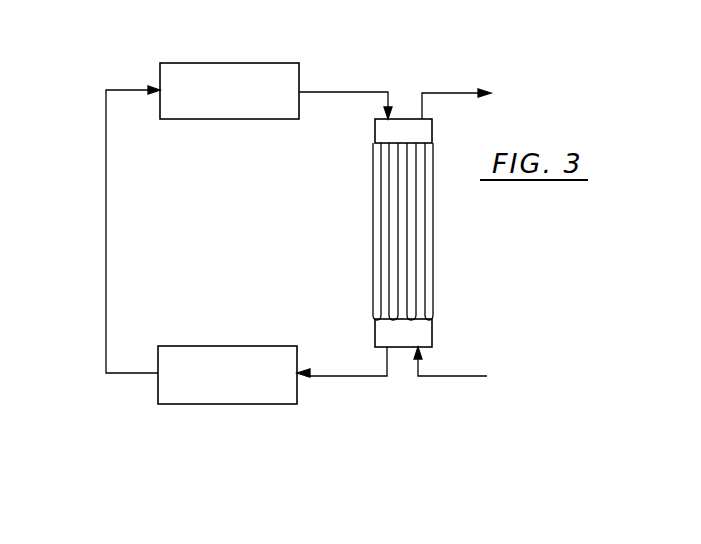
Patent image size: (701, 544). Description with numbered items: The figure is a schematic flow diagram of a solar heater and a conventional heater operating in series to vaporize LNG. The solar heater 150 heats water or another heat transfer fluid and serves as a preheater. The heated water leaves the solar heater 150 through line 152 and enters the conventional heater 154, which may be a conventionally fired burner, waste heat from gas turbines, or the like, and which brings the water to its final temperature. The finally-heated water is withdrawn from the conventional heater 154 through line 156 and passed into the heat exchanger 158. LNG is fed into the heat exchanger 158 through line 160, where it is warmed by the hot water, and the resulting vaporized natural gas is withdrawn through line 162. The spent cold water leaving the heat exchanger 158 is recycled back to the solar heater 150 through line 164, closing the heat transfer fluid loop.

The solar heater 150 is at (190, 404).
The line 152 is at (106, 219).
The conventional heater 154 is at (198, 63).
The line 156 is at (348, 92).
The heat exchanger 158 is at (433, 235).
The line 160 is at (447, 376).
The line 162 is at (450, 94).
The line 164 is at (347, 376).